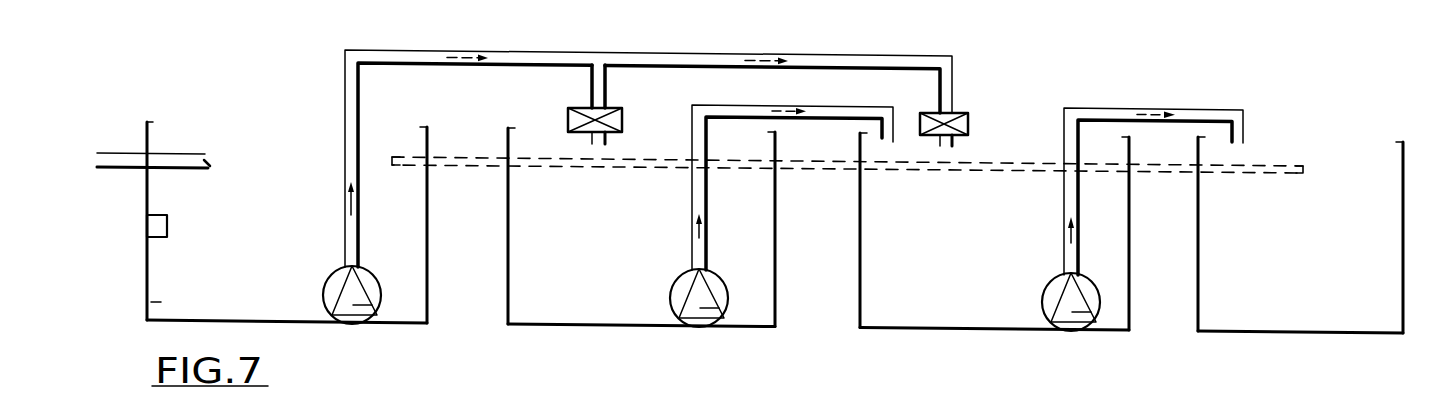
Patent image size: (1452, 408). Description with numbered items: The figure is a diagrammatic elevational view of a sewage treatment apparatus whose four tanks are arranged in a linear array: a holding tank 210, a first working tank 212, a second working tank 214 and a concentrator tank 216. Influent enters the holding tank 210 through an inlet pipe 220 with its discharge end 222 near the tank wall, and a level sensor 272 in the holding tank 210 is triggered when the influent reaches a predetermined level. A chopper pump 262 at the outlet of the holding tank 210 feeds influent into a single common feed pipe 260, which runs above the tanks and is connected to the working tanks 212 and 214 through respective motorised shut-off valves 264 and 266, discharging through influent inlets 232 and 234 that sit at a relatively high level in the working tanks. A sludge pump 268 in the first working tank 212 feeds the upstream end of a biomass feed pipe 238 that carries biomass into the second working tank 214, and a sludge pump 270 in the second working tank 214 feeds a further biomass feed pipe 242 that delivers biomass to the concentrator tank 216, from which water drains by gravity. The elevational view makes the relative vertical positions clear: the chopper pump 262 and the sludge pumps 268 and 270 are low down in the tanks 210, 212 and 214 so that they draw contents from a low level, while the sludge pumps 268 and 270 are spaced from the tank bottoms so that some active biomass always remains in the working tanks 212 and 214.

The holding tank 210 is at (134, 310).
The first working tank 212 is at (767, 292).
The second working tank 214 is at (1117, 279).
The concentrator tank 216 is at (1390, 307).
The inlet pipe 220 is at (122, 156).
The inlet outlet 222 is at (206, 160).
The influent inlet 232 is at (612, 140).
The influent inlet 234 is at (960, 145).
The biomass feed pipe 238 is at (816, 120).
The biomass feed pipe 242 is at (1150, 108).
The common feed pipe 260 is at (664, 63).
The chopper pump 262 is at (378, 318).
The motorised shut-off valve 264 is at (614, 120).
The motorised shut-off valve 266 is at (972, 120).
The sludge pump 268 is at (712, 325).
The sludge pump 270 is at (1076, 331).
The level sensor 272 is at (171, 226).